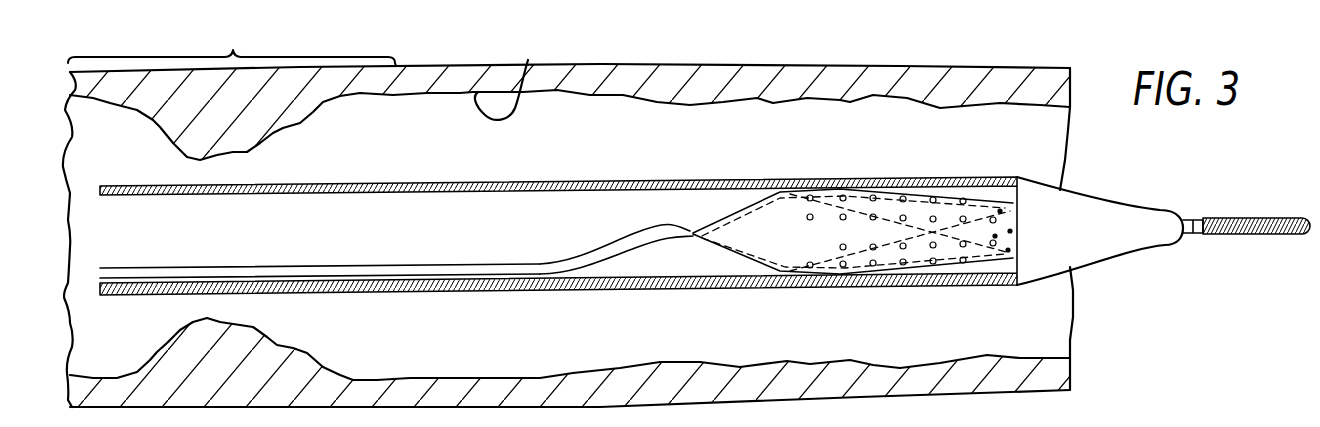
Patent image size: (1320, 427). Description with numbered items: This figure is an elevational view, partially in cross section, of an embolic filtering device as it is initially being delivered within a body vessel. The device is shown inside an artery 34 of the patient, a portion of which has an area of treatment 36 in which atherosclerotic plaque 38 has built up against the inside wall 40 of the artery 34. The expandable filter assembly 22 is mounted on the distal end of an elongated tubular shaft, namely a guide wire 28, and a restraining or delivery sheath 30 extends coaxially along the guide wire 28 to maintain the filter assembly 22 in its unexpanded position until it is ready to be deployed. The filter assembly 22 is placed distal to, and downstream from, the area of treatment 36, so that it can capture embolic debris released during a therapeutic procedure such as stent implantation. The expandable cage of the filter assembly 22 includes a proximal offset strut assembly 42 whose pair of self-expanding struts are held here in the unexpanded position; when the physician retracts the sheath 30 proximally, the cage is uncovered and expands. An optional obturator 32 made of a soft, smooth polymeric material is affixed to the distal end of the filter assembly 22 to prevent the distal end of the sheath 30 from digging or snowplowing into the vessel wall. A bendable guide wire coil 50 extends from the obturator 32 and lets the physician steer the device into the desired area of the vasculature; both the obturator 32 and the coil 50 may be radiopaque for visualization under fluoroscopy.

The expandable filter assembly 22 is at (712, 251).
The guide wire 28 is at (205, 271).
The restraining sheath 30 is at (507, 182).
The obturator 32 is at (1097, 225).
The artery 34 is at (960, 68).
The area of treatment 36 is at (233, 50).
The atherosclerotic plaque 38 is at (258, 112).
The inside wall 40 is at (528, 60).
The proximal offset strut assembly 42 is at (633, 241).
The guide wire coil 50 is at (1243, 218).